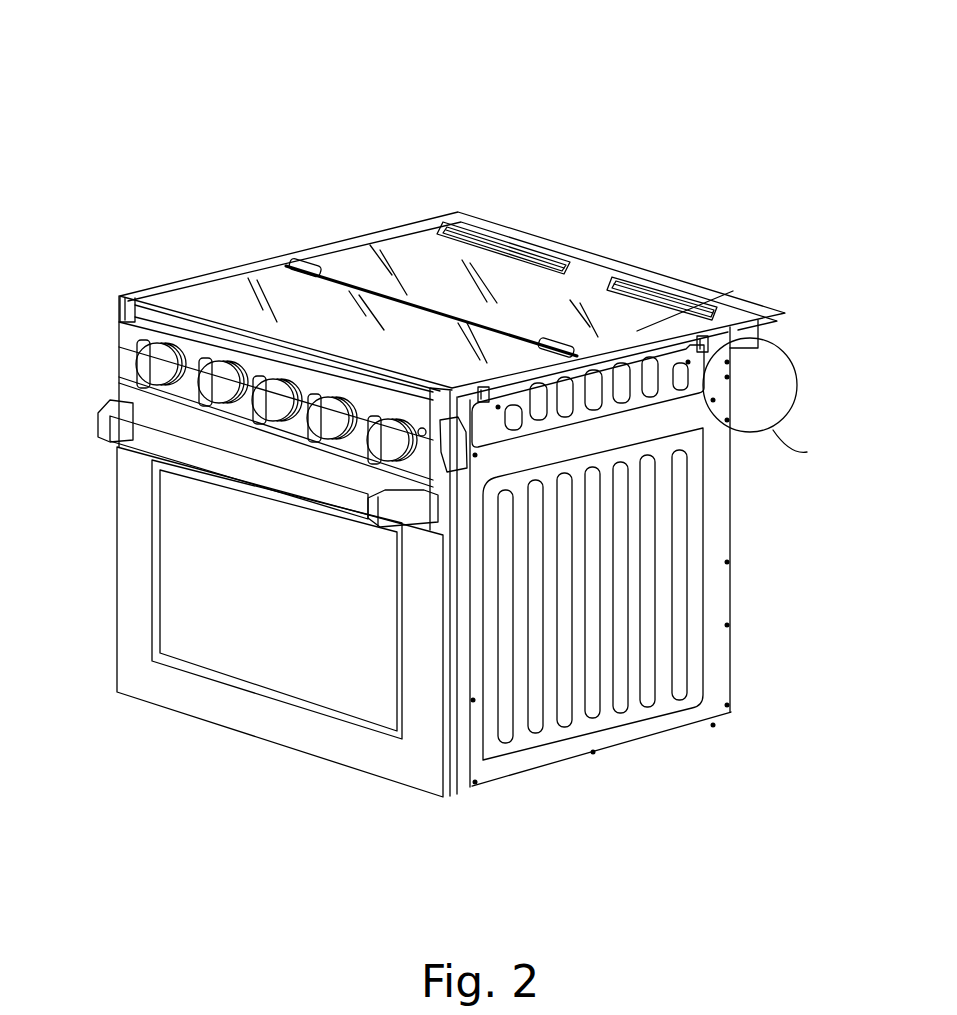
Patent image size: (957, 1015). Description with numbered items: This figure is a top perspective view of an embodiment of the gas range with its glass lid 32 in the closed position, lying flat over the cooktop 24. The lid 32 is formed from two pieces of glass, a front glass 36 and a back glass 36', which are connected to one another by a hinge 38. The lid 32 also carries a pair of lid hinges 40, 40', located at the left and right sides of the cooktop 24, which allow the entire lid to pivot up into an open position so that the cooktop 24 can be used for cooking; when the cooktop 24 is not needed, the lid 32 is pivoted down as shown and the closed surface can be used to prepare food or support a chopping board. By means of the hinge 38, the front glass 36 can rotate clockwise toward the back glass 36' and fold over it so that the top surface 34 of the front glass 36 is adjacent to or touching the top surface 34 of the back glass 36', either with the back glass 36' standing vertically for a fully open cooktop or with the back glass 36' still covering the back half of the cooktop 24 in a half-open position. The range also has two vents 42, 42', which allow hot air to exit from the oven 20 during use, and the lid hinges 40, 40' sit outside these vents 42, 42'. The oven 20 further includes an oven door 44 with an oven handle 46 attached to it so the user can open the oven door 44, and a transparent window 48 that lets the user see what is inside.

The oven 20 is at (680, 502).
The cooktop 24 is at (676, 218).
The glass lid 32 is at (277, 284).
The top surface 34 is at (744, 337).
The front glass 36 is at (342, 253).
The back glass 36' is at (468, 209).
The hinge 38 is at (296, 258).
The lid hinge 40 is at (503, 144).
The lid hinge 40' is at (717, 234).
The vent 42 is at (509, 161).
The vent 42' is at (684, 201).
The oven door 44 is at (132, 520).
The oven handle 46 is at (132, 433).
The transparent window 48 is at (243, 577).